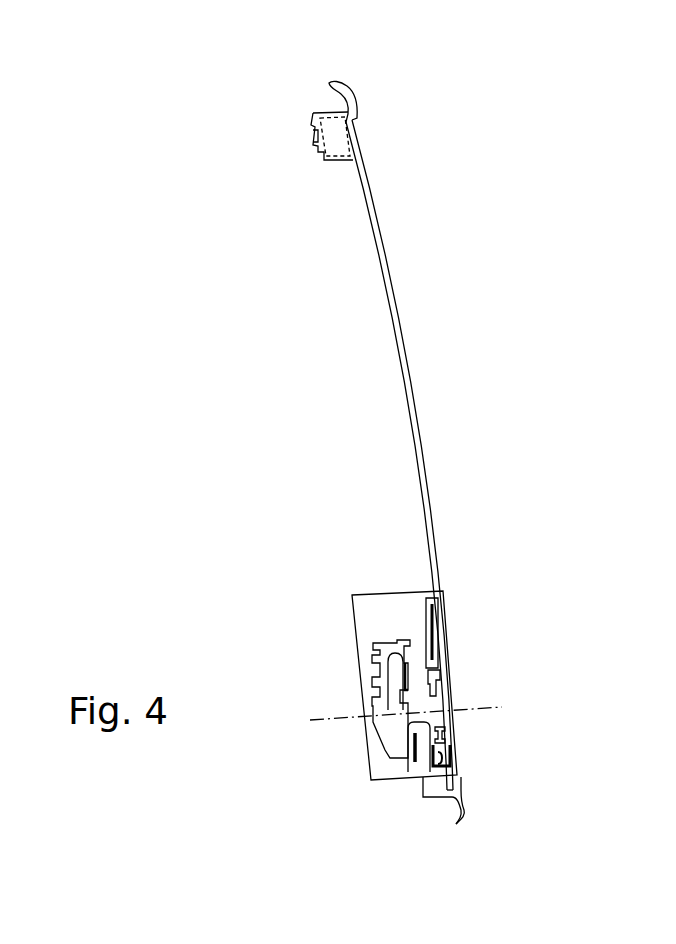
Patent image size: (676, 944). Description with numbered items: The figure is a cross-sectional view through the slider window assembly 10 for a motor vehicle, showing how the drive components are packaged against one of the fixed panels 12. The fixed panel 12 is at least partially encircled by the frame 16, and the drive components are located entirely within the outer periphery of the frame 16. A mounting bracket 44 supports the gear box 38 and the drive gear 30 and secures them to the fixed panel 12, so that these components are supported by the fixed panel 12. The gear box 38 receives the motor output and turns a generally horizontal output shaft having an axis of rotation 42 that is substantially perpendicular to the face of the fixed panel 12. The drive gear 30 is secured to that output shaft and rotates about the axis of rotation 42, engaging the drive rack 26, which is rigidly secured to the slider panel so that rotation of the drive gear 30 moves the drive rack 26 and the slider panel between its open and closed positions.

The slider window assembly 10 is at (565, 350).
The fixed panel 12 is at (393, 294).
The frame 16 is at (456, 824).
The drive rack 26 is at (452, 752).
The drive gear 30 is at (441, 684).
The gear box 38 is at (380, 642).
The axis of rotation 42 is at (502, 707).
The mounting bracket 44 is at (430, 622).